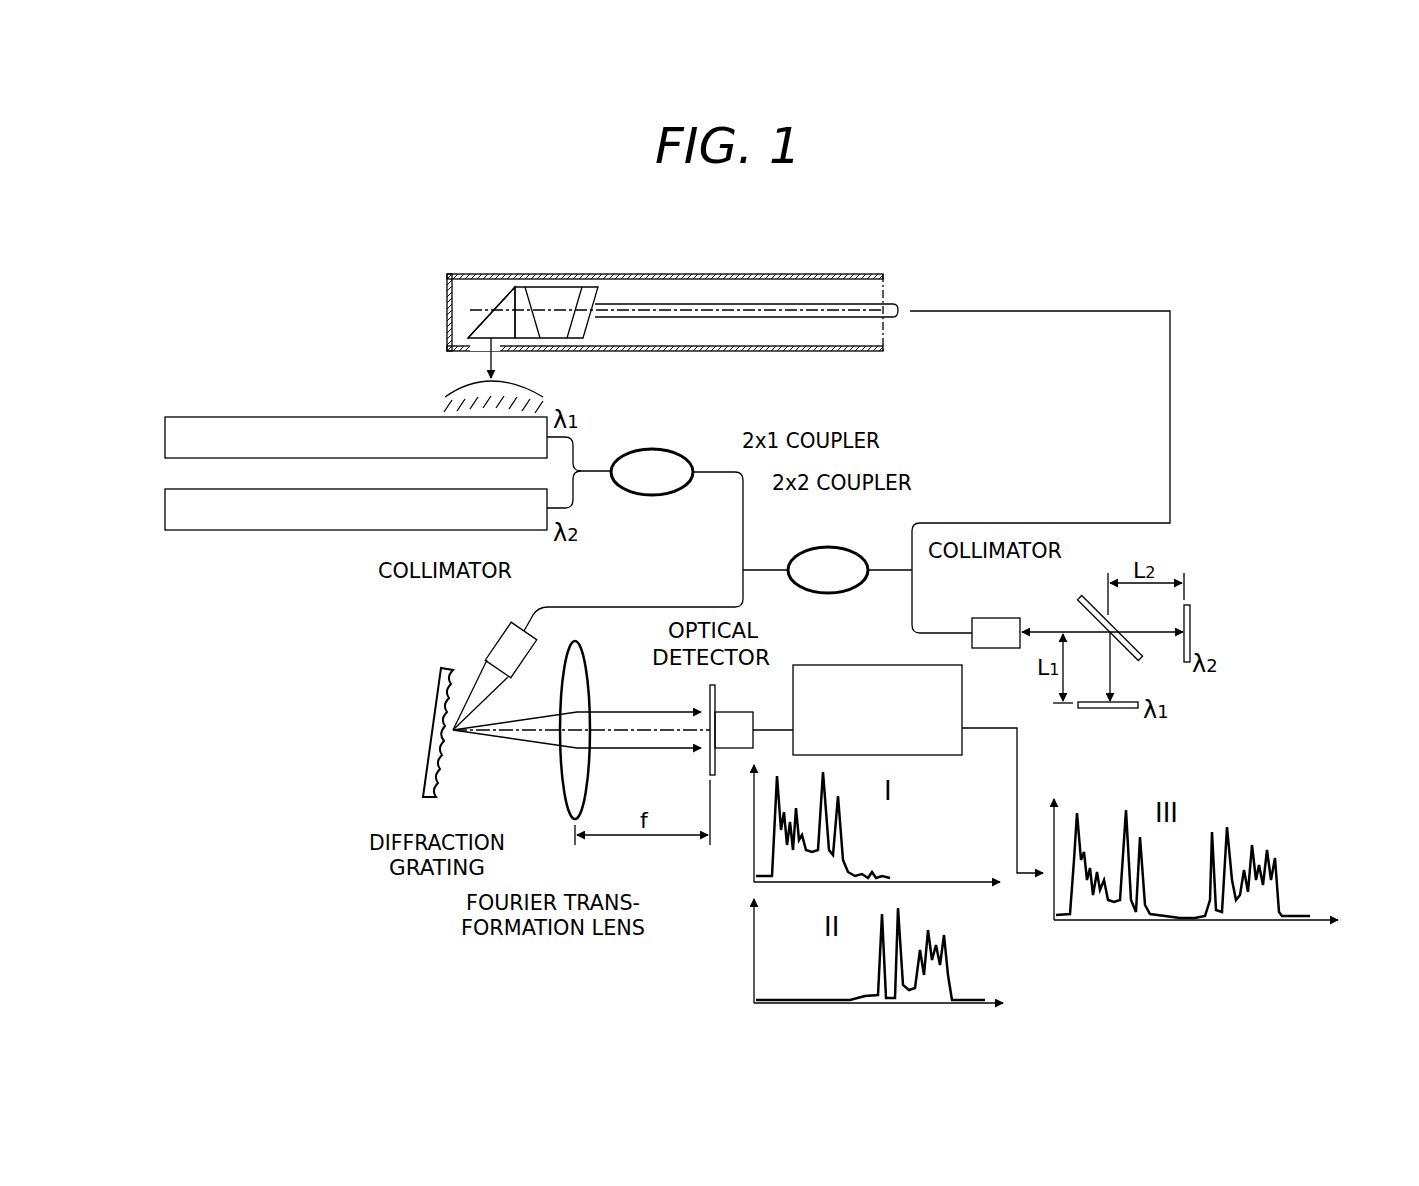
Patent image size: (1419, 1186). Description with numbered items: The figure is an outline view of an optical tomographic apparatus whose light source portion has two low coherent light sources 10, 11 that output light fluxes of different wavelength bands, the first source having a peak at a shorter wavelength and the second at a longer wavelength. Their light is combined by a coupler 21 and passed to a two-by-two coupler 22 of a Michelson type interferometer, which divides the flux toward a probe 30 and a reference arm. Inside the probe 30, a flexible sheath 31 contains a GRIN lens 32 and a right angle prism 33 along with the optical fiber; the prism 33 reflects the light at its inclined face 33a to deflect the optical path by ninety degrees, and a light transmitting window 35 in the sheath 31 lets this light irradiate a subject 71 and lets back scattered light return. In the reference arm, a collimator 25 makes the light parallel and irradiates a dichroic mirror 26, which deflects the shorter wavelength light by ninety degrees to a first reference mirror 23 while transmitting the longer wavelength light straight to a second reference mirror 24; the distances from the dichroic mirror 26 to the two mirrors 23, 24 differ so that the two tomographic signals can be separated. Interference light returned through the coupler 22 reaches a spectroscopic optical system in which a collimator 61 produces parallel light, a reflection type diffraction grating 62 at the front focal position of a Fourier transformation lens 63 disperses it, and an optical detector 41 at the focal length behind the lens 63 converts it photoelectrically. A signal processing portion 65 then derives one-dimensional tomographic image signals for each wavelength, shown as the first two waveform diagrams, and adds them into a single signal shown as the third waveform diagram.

The low coherent light source 10 is at (205, 417).
The low coherent light source 11 is at (205, 530).
The coupler 21 is at (678, 452).
The 2×2 coupler 22 is at (820, 548).
The first reference mirror 23 is at (1095, 709).
The second reference mirror 24 is at (1190, 612).
The collimator 25 is at (985, 618).
The dichroic mirror 26 is at (1085, 600).
The probe 30 is at (644, 307).
The flexible sheath 31 is at (700, 353).
The GRIN lens 32 is at (563, 292).
The right angle prism 33 is at (456, 286).
The inclined face 33a is at (505, 297).
The light transmitting window 35 is at (478, 351).
The optical detector 41 is at (717, 700).
The collimator 61 is at (498, 636).
The diffraction grating 62 is at (437, 797).
The Fourier transformation lens 63 is at (565, 803).
The signal processing portion 65 is at (820, 665).
The subject 71 is at (515, 383).